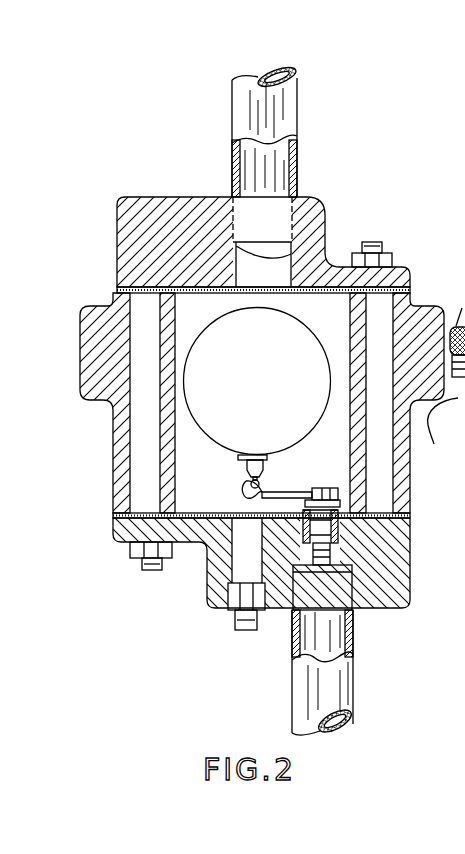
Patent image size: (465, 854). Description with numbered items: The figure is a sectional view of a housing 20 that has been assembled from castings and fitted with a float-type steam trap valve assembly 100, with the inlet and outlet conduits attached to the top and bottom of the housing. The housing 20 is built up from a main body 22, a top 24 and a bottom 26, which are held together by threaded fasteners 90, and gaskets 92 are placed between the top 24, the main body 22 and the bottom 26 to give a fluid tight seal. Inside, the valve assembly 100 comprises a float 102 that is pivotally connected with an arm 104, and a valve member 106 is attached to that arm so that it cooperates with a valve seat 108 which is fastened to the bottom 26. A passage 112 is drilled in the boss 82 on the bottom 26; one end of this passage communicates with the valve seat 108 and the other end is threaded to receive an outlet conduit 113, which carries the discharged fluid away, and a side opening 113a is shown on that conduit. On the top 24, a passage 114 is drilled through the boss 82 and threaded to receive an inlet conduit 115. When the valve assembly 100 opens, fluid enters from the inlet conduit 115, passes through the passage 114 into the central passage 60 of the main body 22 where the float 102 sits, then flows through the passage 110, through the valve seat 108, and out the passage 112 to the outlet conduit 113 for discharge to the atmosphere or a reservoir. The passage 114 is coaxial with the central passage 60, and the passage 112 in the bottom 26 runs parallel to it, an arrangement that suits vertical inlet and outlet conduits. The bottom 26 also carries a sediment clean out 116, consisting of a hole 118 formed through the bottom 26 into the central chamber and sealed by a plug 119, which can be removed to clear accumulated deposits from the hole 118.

The housing 20 is at (88, 298).
The main body 22 is at (116, 424).
The top 24 is at (115, 230).
The bottom 26 is at (207, 598).
The central passage 60 is at (181, 469).
The boss 82 is at (386, 611).
The threaded fasteners 90 is at (382, 243).
The gaskets 92 is at (113, 515).
The float-type steam trap valve assembly 100 is at (329, 470).
The float 102 is at (243, 309).
The arm 104 is at (260, 492).
The valve member 106 is at (248, 492).
The valve seat 108 is at (340, 537).
The passage 110 is at (326, 542).
The passage 112 is at (356, 634).
The outlet conduit 113 is at (292, 700).
The side port 113a is at (435, 435).
The passage 114 is at (320, 262).
The inlet conduit 115 is at (296, 100).
The sediment clean out 116 is at (214, 645).
The hole 118 is at (236, 550).
The plug 119 is at (250, 631).